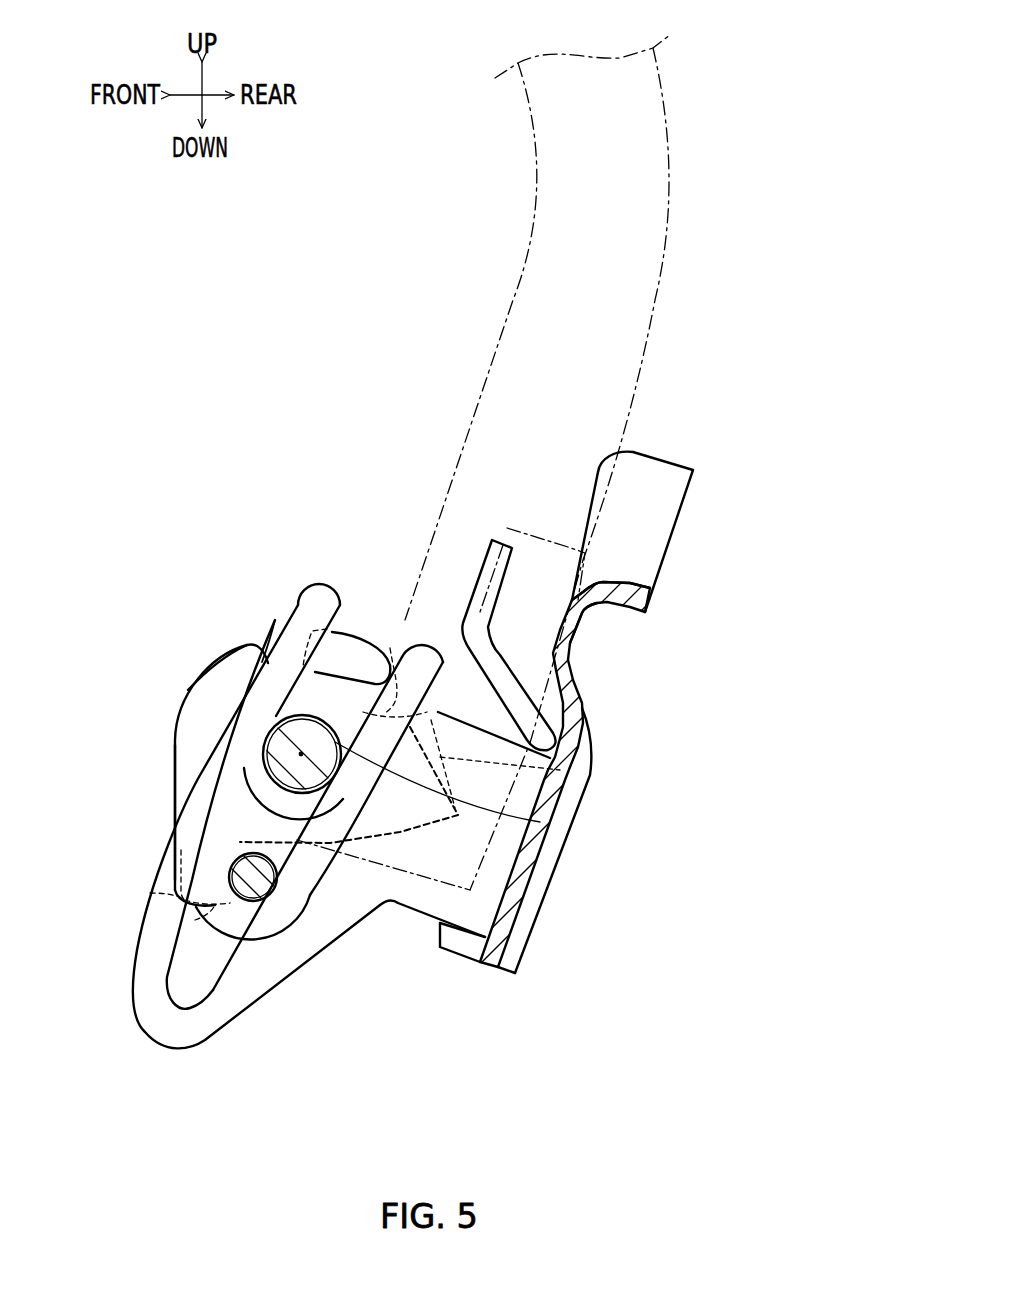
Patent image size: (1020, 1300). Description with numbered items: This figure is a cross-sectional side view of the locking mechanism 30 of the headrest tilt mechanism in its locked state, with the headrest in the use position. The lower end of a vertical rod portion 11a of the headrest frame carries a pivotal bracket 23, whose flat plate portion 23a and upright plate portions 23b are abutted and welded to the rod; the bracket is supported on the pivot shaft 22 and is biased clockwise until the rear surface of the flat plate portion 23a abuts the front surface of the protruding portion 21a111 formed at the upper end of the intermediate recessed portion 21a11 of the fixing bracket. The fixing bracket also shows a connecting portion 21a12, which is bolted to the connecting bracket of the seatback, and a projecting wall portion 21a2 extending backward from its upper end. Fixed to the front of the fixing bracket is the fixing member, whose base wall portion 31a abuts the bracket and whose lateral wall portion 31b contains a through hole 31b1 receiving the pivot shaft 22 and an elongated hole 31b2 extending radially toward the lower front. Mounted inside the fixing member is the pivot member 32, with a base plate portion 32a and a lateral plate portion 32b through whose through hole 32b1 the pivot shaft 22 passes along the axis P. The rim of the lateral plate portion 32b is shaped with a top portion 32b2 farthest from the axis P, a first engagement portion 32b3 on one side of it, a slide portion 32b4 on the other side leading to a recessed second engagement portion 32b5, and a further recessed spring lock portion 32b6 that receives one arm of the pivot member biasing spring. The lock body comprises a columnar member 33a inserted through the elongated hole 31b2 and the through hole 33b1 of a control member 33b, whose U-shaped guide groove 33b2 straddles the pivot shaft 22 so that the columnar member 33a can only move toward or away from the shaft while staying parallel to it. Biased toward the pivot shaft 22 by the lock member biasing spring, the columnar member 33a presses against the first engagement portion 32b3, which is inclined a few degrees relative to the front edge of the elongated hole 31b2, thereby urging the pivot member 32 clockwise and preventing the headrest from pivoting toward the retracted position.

The vertical rod portion 11a is at (672, 216).
The connecting portion 21a12 is at (600, 487).
The intermediate recessed portion 21a11 is at (538, 850).
The projecting wall portion 21a2 is at (618, 591).
The protruding portion 21a111 is at (588, 628).
The base wall portion 31a is at (510, 923).
The pivotal bracket 23 is at (507, 528).
The flat plate portion 23a is at (480, 853).
The upright plate portion 23b is at (407, 863).
The pivot member 32 is at (180, 722).
The lateral plate portion 32b is at (193, 690).
The slide portion 32b4 is at (176, 790).
The through hole 32b1 is at (265, 762).
The pivot shaft 22 is at (332, 713).
The axis P is at (300, 754).
The second engagement portion 32b5 is at (293, 669).
The spring lock portion 32b6 is at (390, 648).
The base plate portion 32a is at (560, 770).
The top portion 32b2 is at (150, 893).
The first engagement portion 32b3 is at (195, 920).
The lateral wall portion 31b is at (143, 1030).
The elongated hole 31b2 is at (210, 990).
The through hole 31b1 is at (280, 723).
The columnar member 33a is at (257, 905).
The control member 33b is at (200, 920).
The through hole 33b1 is at (236, 866).
The guide groove 33b2 is at (540, 822).
The locking mechanism 30 is at (160, 608).